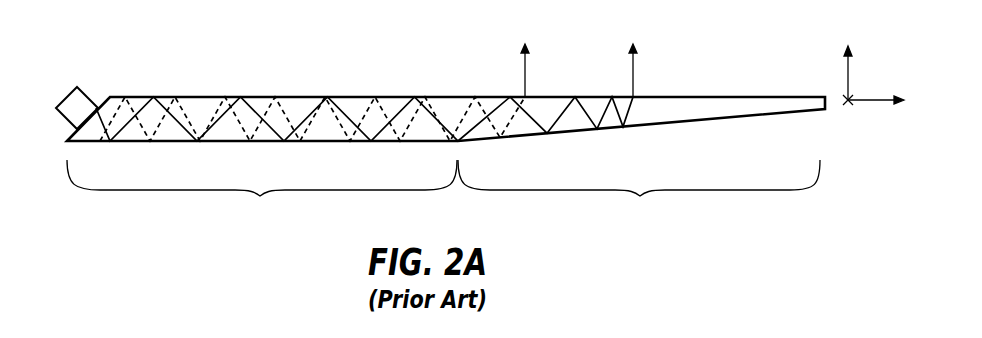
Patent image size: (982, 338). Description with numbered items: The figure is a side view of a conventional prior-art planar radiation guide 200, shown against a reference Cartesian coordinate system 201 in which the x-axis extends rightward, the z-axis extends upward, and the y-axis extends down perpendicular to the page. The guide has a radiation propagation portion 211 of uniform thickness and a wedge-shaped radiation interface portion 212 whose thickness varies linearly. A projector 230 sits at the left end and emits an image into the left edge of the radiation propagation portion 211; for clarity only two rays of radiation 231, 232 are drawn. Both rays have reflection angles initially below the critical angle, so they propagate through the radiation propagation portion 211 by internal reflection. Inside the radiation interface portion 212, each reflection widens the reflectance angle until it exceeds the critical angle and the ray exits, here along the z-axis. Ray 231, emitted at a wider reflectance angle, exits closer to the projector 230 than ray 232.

The planar radiation guide 200 is at (322, 25).
The reference Cartesian coordinate system 201 is at (870, 103).
The radiation propagation portion 211 is at (262, 192).
The radiation interface portion 212 is at (639, 192).
The projector 230 is at (63, 90).
The ray of radiation 231 is at (117, 103).
The ray of radiation 232 is at (633, 72).